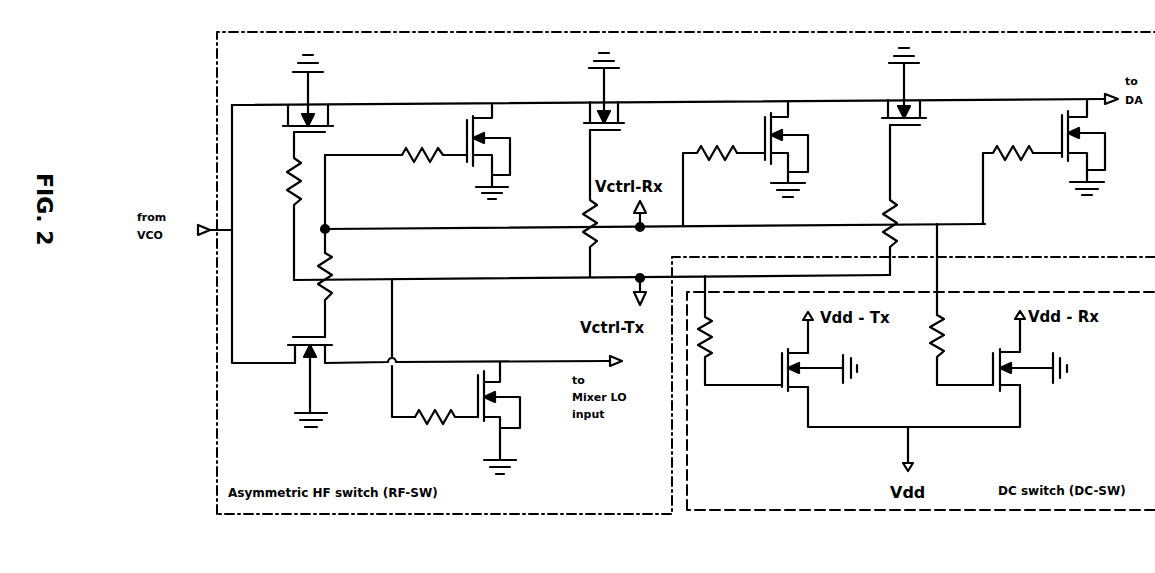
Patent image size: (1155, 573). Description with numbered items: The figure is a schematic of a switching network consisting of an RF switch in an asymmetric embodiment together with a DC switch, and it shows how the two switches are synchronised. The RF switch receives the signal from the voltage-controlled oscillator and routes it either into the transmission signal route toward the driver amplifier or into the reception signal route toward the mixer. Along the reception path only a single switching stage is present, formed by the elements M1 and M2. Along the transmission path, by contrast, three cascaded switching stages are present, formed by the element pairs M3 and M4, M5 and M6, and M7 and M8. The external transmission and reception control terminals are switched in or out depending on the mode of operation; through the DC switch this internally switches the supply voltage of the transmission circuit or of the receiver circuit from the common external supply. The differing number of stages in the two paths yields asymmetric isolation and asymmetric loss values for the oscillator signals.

The element M1 is at (509, 418).
The element M2 is at (294, 377).
The element M3 is at (293, 93).
The element M4 is at (509, 152).
The element M5 is at (587, 91).
The element M6 is at (807, 149).
The element M7 is at (885, 86).
The element M8 is at (1103, 147).